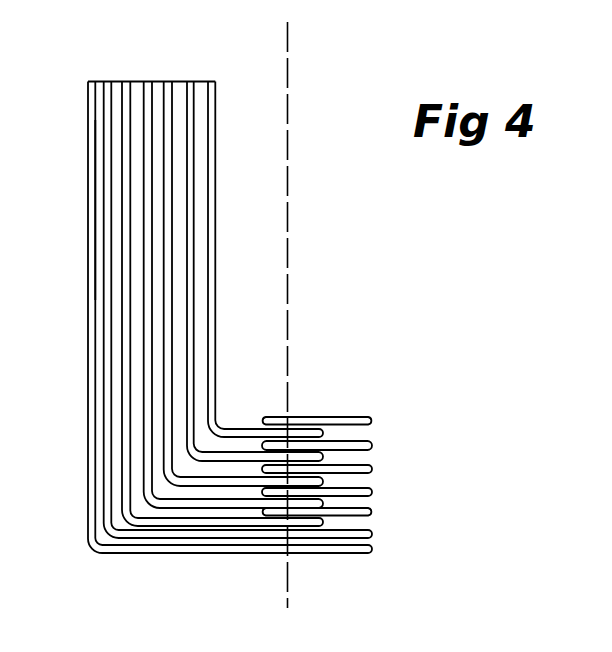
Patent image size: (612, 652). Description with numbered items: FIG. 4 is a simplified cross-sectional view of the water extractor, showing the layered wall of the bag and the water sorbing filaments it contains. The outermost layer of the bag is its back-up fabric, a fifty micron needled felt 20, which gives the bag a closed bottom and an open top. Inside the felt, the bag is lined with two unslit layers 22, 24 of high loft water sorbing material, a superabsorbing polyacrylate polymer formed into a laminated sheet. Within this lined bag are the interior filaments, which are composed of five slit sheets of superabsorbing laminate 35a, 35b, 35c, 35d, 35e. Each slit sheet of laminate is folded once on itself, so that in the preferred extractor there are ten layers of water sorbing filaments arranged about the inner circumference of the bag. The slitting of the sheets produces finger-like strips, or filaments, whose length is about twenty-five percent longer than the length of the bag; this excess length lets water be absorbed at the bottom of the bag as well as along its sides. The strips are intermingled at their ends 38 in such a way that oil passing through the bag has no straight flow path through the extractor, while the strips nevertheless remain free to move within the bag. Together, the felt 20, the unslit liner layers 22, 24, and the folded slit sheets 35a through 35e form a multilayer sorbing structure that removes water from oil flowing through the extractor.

The needled felt 20 is at (88, 157).
The unslit layer of high loft water sorbing material 22 is at (98, 178).
The unslit layer of high loft water sorbing material 24 is at (107, 230).
The slit sheet of superabsorbing laminate 35a is at (125, 86).
The slit sheet of superabsorbing laminate 35b is at (145, 83).
The slit sheet of superabsorbing laminate 35c is at (167, 83).
The slit sheet of superabsorbing laminate 35d is at (190, 83).
The slit sheet of superabsorbing laminate 35e is at (212, 83).
The ends of the strips 38 is at (323, 416).